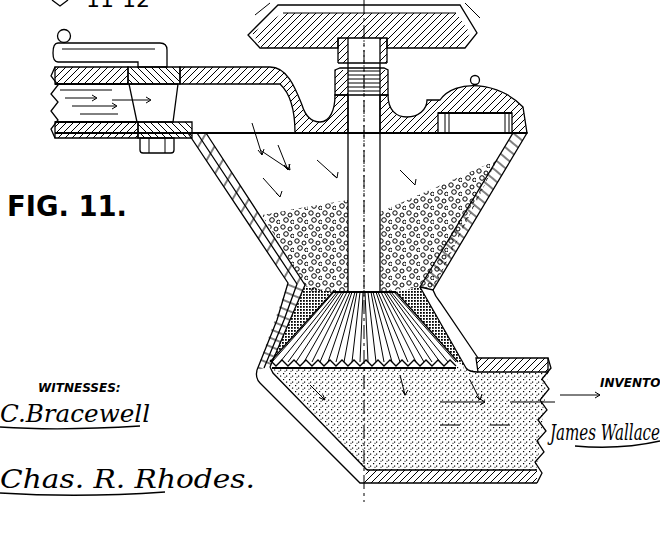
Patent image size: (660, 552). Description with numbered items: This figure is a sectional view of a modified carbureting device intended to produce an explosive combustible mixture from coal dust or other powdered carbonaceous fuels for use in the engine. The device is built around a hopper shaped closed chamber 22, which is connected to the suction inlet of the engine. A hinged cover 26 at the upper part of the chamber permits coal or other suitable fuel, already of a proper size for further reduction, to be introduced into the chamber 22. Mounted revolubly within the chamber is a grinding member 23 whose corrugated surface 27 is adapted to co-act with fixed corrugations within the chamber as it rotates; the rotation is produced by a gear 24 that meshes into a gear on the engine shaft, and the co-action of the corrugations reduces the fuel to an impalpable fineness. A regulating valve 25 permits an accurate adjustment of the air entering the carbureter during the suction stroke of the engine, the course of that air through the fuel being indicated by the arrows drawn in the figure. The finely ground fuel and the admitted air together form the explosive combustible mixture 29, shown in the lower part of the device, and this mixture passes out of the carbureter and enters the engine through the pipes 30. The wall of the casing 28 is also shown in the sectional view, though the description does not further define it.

The hopper shaped closed chamber 22 is at (470, 230).
The grinding member 23 is at (389, 63).
The gear 24 is at (475, 25).
The regulating valve 25 is at (163, 42).
The hinged cover 26 is at (526, 100).
The corrugated surface 27 is at (432, 332).
The hopper casing wall 28 is at (517, 162).
The explosive combustible mixture 29 is at (340, 418).
The pipes 30 is at (550, 353).